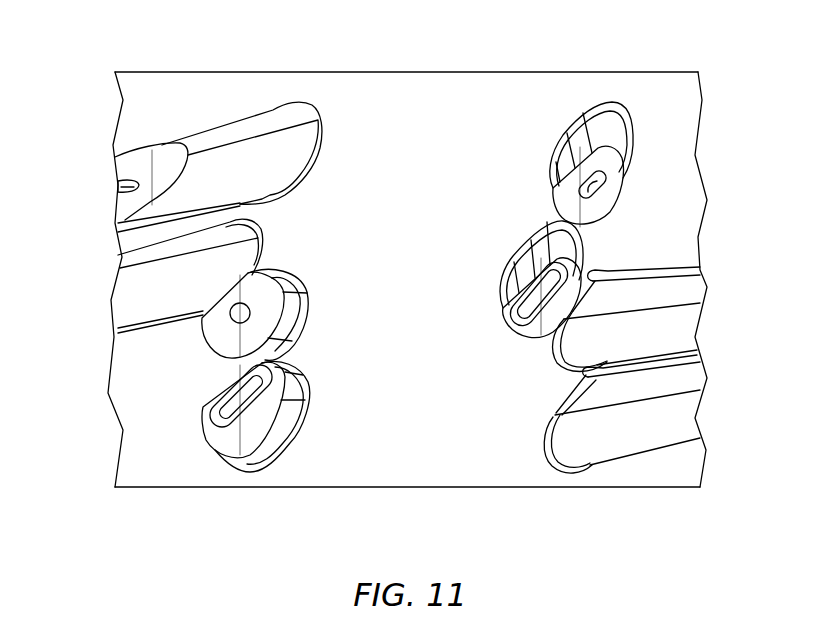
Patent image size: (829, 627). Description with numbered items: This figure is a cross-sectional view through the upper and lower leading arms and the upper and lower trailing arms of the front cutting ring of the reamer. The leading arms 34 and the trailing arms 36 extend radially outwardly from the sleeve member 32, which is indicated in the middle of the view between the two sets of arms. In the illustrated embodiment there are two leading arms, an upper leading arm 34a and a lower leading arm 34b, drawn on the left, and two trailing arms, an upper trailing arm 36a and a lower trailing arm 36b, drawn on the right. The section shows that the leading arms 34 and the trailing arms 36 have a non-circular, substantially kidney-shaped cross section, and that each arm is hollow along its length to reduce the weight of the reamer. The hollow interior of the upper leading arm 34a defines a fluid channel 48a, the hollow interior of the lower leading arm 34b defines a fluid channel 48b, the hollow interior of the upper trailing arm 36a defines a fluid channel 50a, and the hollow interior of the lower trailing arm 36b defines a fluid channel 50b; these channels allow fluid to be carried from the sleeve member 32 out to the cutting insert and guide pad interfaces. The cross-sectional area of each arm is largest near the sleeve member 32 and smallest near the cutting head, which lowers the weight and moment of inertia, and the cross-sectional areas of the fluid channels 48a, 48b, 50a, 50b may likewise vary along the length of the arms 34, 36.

The sleeve member 32 is at (441, 192).
The leading arms 34 is at (150, 388).
The upper leading arm 34a is at (214, 331).
The lower leading arm 34b is at (212, 446).
The trailing arms 36 is at (185, 118).
The upper trailing arm 36a is at (596, 130).
The lower trailing arm 36b is at (582, 277).
The fluid channel 48a is at (250, 313).
The fluid channel 48b is at (237, 409).
The fluid channel 50a is at (588, 188).
The fluid channel 50b is at (527, 310).